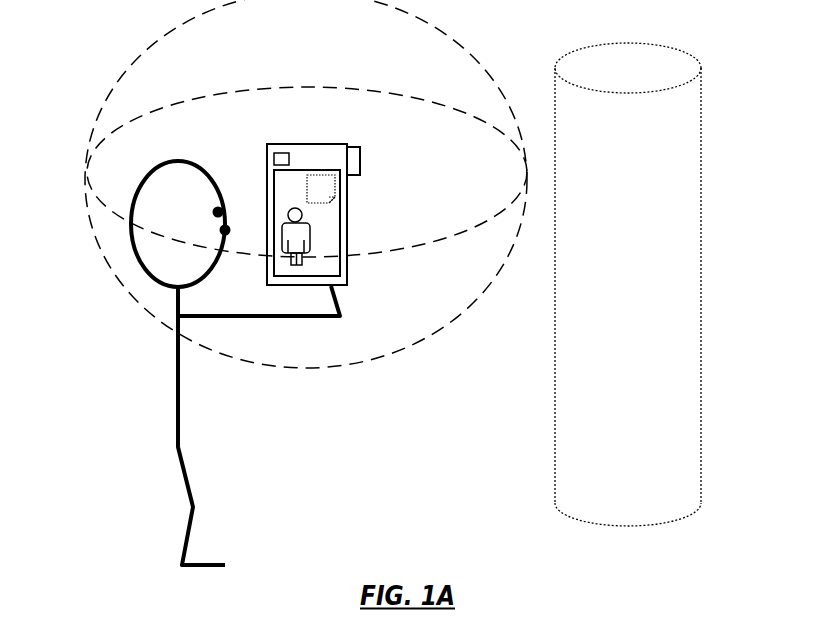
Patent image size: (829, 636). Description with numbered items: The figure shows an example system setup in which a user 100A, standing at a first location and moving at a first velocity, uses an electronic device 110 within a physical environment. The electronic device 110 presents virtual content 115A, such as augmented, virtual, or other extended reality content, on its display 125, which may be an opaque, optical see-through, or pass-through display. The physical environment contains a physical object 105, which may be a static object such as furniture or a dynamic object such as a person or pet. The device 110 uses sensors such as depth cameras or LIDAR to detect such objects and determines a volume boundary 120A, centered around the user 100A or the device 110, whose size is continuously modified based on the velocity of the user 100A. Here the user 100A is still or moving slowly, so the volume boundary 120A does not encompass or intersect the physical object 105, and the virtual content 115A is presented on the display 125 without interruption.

The user 100A is at (235, 337).
The physical object 105 is at (674, 272).
The electronic device 110 is at (363, 200).
The virtual content 115A is at (353, 223).
The volume boundary 120A is at (306, 210).
The display 125 is at (262, 294).